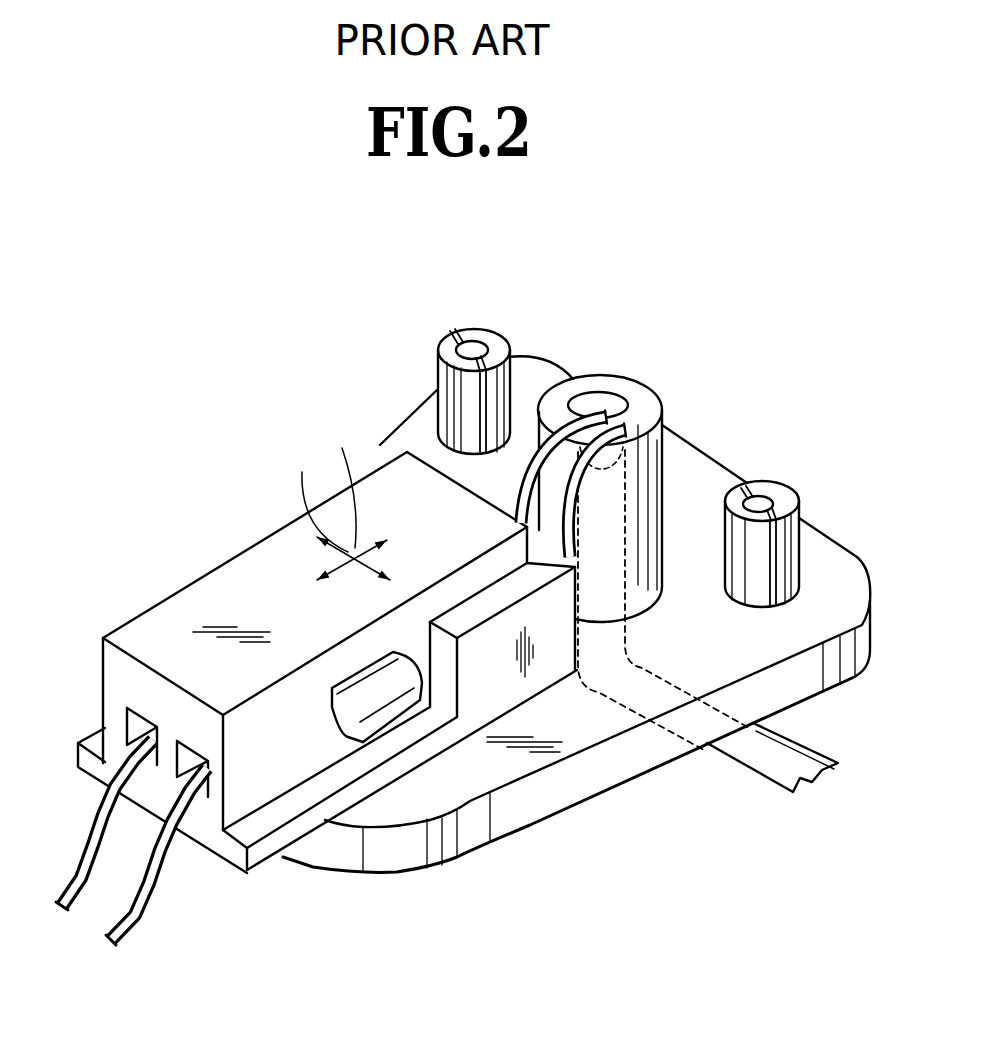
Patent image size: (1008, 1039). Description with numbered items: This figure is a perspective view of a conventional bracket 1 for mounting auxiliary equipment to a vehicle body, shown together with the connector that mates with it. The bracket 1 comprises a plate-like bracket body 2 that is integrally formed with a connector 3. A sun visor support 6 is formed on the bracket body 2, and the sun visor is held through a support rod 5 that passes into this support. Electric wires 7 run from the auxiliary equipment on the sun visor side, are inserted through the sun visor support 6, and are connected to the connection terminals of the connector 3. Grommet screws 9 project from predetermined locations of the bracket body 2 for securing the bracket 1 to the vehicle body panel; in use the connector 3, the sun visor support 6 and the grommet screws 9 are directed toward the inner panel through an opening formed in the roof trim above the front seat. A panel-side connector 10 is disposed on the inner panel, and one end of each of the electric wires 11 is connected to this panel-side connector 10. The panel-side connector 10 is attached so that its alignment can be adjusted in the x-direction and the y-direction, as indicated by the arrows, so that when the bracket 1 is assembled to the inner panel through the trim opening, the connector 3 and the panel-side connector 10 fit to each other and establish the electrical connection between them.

The bracket 1 is at (480, 616).
The bracket body 2 is at (843, 563).
The connector 3 is at (510, 683).
The support rod 5 is at (790, 755).
The sun visor support 6 is at (643, 396).
The electric wires 7 is at (606, 412).
The grommet screws 9 is at (485, 330).
The panel-side connector 10 is at (216, 557).
The electric wires 11 is at (100, 843).